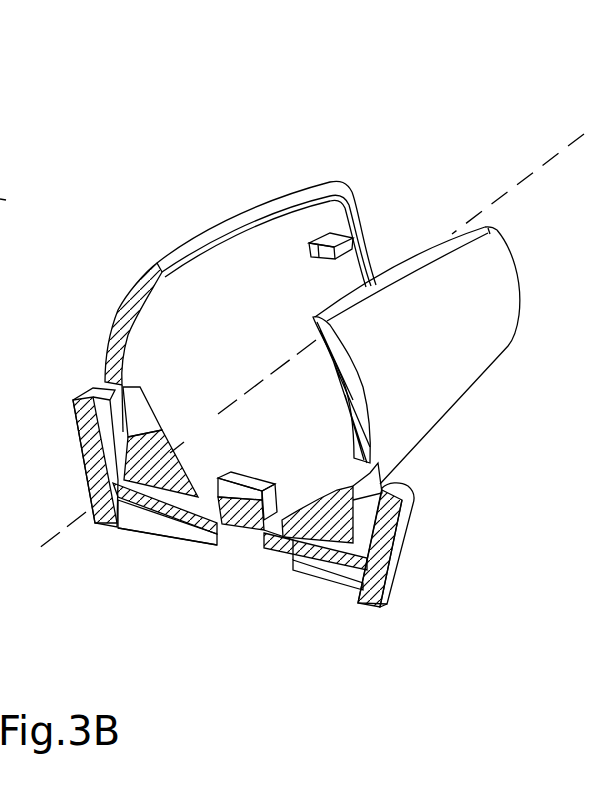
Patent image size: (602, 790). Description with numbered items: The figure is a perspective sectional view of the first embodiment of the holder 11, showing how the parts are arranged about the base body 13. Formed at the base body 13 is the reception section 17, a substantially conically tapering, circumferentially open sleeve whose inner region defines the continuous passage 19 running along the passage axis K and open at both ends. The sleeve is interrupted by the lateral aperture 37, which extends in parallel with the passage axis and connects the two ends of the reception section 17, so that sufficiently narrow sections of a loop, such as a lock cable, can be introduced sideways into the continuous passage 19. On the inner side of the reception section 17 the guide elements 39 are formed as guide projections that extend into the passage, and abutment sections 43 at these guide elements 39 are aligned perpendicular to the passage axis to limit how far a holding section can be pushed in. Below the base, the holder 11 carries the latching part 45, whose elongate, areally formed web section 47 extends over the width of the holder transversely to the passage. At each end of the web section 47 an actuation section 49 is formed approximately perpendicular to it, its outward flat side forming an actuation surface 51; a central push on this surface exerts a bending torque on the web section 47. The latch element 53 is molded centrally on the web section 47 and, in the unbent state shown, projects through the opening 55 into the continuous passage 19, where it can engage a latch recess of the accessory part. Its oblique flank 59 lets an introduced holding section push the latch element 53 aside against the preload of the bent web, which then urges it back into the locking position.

The holder 11 is at (158, 156).
The base body 13 is at (470, 469).
The reception section 17 is at (470, 330).
The continuous passage 19 is at (470, 213).
The lateral aperture 37 is at (252, 215).
The guide elements 39 is at (340, 247).
The abutment sections 43 is at (313, 245).
The latching part 45 is at (167, 510).
The web section 47 is at (270, 543).
The actuation section 49 is at (100, 480).
The actuation surface 51 is at (397, 548).
The latch element 53 is at (252, 495).
The opening 55 is at (283, 498).
The flank 59 is at (236, 497).